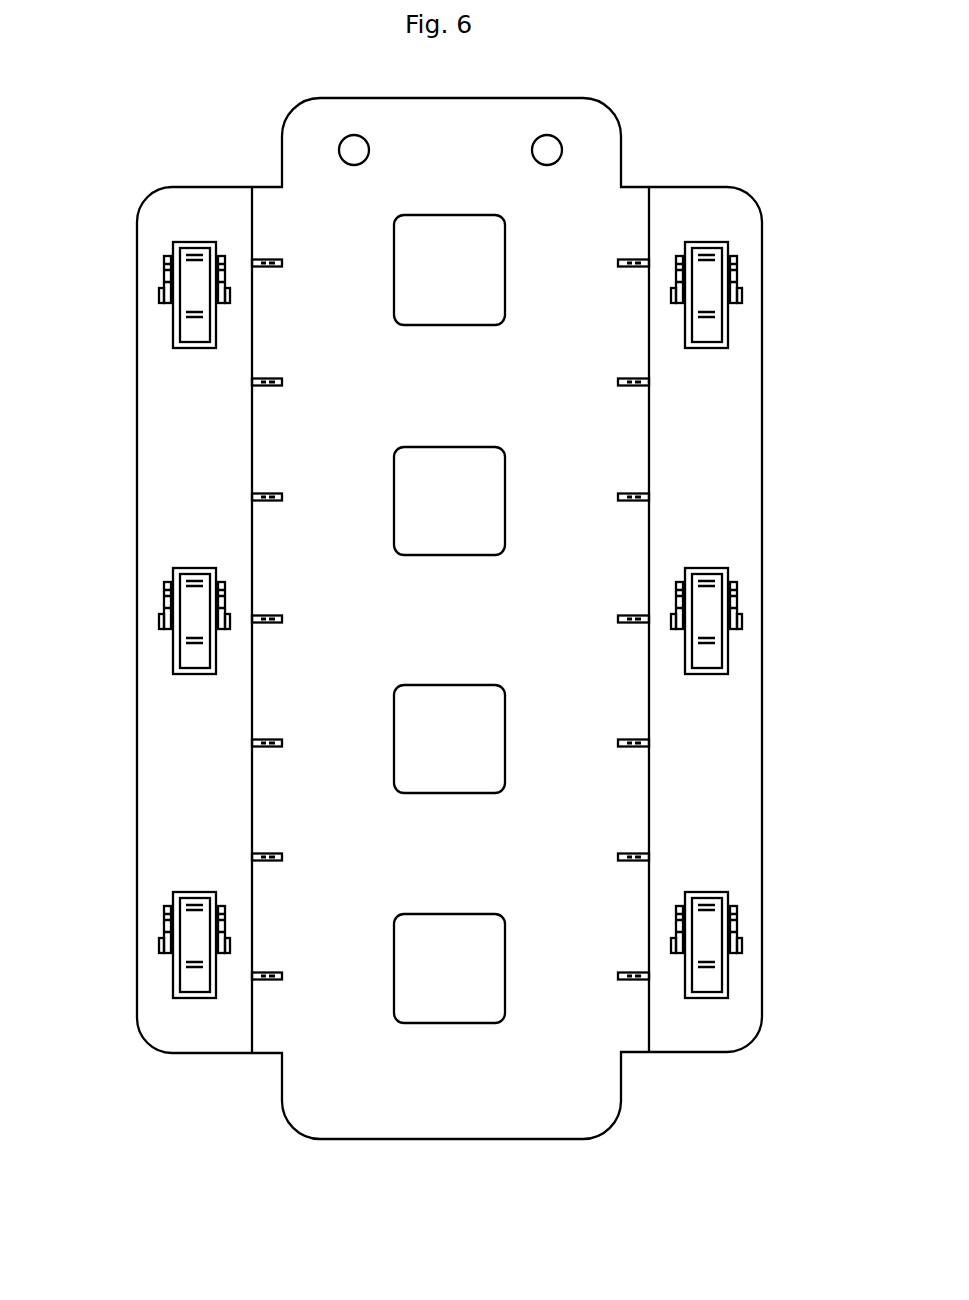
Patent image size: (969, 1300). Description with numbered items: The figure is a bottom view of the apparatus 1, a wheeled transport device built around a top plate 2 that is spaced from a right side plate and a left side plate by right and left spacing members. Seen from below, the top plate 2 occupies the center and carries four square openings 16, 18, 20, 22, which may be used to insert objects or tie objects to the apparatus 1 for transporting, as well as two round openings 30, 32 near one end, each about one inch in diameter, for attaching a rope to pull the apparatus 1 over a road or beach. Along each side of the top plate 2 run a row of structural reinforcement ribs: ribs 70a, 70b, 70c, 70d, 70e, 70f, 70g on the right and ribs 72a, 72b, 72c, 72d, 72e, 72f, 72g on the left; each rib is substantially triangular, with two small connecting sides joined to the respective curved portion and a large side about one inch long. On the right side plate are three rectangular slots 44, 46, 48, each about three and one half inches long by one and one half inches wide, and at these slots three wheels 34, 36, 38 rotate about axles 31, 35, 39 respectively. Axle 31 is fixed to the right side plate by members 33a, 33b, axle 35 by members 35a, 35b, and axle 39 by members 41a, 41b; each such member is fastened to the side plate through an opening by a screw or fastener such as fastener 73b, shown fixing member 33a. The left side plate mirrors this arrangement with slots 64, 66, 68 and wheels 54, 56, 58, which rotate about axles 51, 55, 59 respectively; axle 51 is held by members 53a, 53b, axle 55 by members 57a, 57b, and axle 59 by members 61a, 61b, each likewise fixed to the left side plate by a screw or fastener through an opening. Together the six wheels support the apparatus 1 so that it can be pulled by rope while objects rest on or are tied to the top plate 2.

The apparatus 1 is at (232, 160).
The top plate 2 is at (402, 405).
The opening 16 is at (455, 286).
The opening 18 is at (453, 519).
The opening 20 is at (467, 735).
The opening 22 is at (468, 943).
The opening 30 is at (362, 160).
The opening 32 is at (556, 160).
The axle 31 is at (674, 303).
The member 33a is at (738, 277).
The member 33b is at (676, 275).
The wheel 34 is at (708, 263).
The axle 35 is at (673, 629).
The member 35a is at (736, 605).
The member 35b is at (676, 600).
The wheel 36 is at (708, 580).
The wheel 38 is at (708, 907).
The axle 39 is at (673, 953).
The member 41a is at (736, 928).
The member 41b is at (676, 927).
The slot 44 is at (725, 345).
The slot 46 is at (725, 568).
The slot 48 is at (718, 893).
The axle 51 is at (230, 945).
The member 53a is at (164, 930).
The member 53b is at (226, 927).
The wheel 54 is at (200, 983).
The axle 55 is at (227, 625).
The wheel 56 is at (200, 658).
The member 57a is at (164, 603).
The member 57b is at (226, 626).
The wheel 58 is at (192, 252).
The axle 59 is at (228, 300).
The member 61a is at (164, 278).
The member 61b is at (226, 277).
The slot 64 is at (188, 892).
The slot 66 is at (161, 629).
The slot 68 is at (188, 345).
The rib 70a is at (620, 260).
The rib 70b is at (621, 379).
The rib 70c is at (621, 493).
The rib 70d is at (622, 616).
The rib 70e is at (625, 739).
The rib 70f is at (622, 853).
The rib 70g is at (622, 972).
The rib 72a is at (275, 973).
The rib 72b is at (276, 853).
The rib 72c is at (277, 739).
The rib 72d is at (278, 616).
The rib 72e is at (275, 492).
The rib 72f is at (275, 378).
The rib 72g is at (278, 260).
The fastener 73b is at (738, 262).